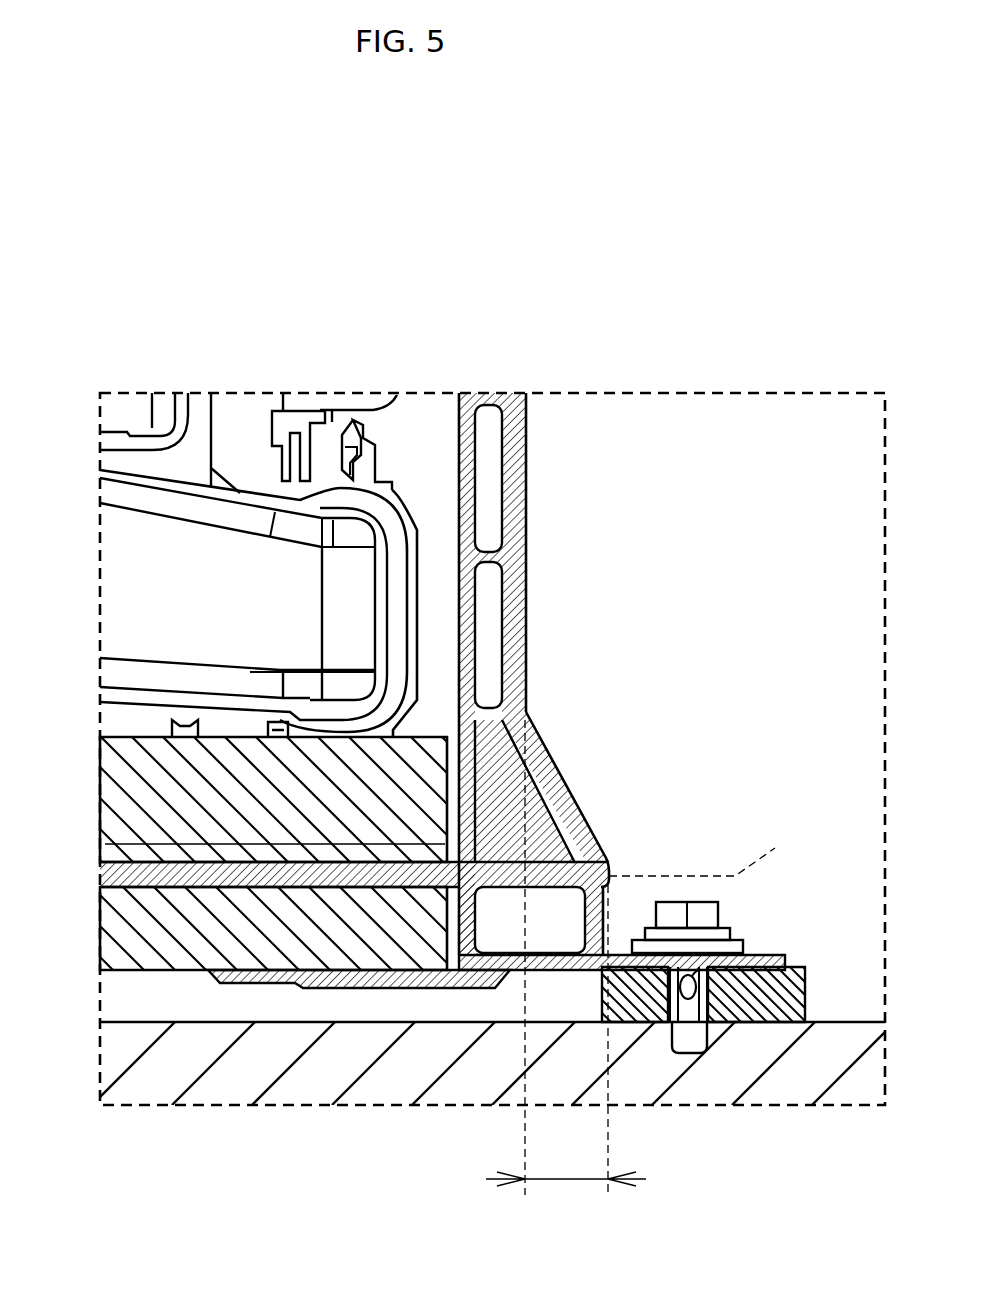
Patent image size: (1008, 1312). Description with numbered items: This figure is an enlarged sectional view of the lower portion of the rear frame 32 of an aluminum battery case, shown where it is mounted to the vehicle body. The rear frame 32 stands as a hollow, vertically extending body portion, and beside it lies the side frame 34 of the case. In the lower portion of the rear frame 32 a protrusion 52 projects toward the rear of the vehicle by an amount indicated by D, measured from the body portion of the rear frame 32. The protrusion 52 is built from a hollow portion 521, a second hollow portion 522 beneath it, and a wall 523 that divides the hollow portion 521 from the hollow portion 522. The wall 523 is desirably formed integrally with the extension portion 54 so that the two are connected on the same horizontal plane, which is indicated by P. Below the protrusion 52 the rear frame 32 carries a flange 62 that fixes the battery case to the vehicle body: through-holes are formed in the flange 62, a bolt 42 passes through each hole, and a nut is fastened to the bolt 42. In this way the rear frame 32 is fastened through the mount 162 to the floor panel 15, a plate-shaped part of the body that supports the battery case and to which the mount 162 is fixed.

The floor panel 15 is at (846, 1090).
The mount 162 is at (756, 1000).
The rear frame 32 is at (528, 550).
The side frame 34 is at (116, 777).
The bolt 42 is at (719, 910).
The protrusion 52 is at (562, 747).
The hollow portion 521 is at (537, 833).
The hollow portion 522 is at (567, 917).
The wall 523 is at (545, 867).
The extension portion 54 is at (268, 838).
The flange 62 is at (762, 953).
The horizontal plane P is at (700, 845).
The protrusion amount D is at (566, 957).